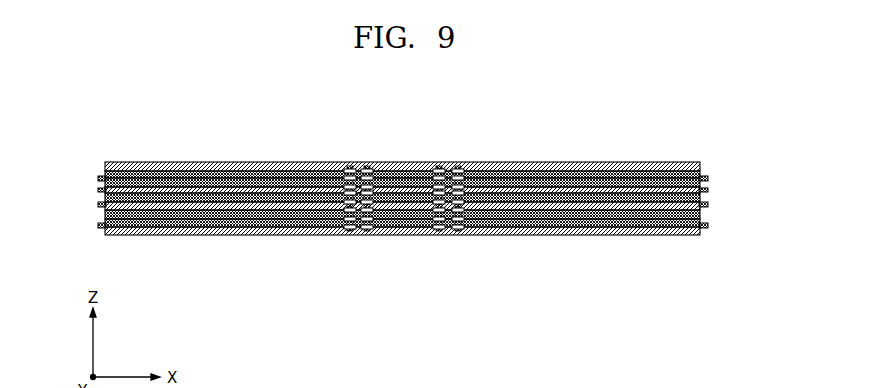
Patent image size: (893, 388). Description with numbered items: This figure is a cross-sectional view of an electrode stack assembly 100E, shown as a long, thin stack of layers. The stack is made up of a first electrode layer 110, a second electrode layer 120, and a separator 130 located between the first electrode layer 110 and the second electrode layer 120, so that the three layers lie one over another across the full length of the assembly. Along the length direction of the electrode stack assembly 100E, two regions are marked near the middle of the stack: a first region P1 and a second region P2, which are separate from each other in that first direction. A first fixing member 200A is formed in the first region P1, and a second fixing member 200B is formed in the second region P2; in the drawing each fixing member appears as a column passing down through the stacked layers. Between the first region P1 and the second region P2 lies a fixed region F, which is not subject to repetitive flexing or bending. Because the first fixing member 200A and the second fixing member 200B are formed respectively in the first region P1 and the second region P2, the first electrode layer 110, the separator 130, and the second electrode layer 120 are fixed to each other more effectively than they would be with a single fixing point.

The electrode stack assembly 100E is at (387, 179).
The first electrode layer 110 is at (102, 198).
The second electrode layer 120 is at (104, 180).
The separator 130 is at (100, 190).
The first fixing member 200A is at (357, 236).
The second fixing member 200B is at (447, 236).
The first region P1 is at (374, 151).
The second region P2 is at (464, 151).
The fixed region F is at (427, 151).